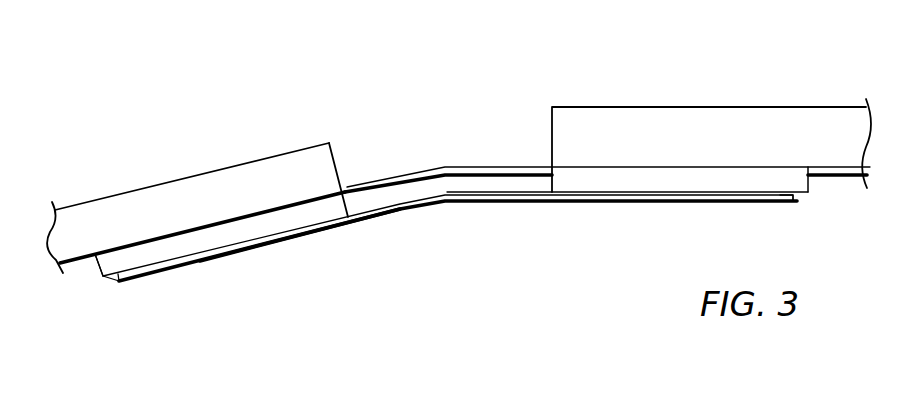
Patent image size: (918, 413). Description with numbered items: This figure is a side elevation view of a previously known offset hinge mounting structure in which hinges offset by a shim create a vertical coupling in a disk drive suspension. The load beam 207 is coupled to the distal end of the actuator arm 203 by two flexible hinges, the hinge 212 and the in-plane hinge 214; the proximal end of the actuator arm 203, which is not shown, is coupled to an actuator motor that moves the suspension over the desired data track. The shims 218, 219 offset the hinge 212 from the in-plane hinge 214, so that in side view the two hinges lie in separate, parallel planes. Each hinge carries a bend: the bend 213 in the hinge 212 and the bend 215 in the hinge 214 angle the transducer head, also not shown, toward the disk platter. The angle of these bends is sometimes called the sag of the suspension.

The actuator arm 203 is at (185, 177).
The load beam 207 is at (712, 107).
The flexible hinge 212 is at (408, 224).
The bend 213 is at (449, 202).
The in-plane hinge 214 is at (390, 153).
The bend 215 is at (445, 167).
The shim 218 is at (95, 257).
The shim 219 is at (796, 189).